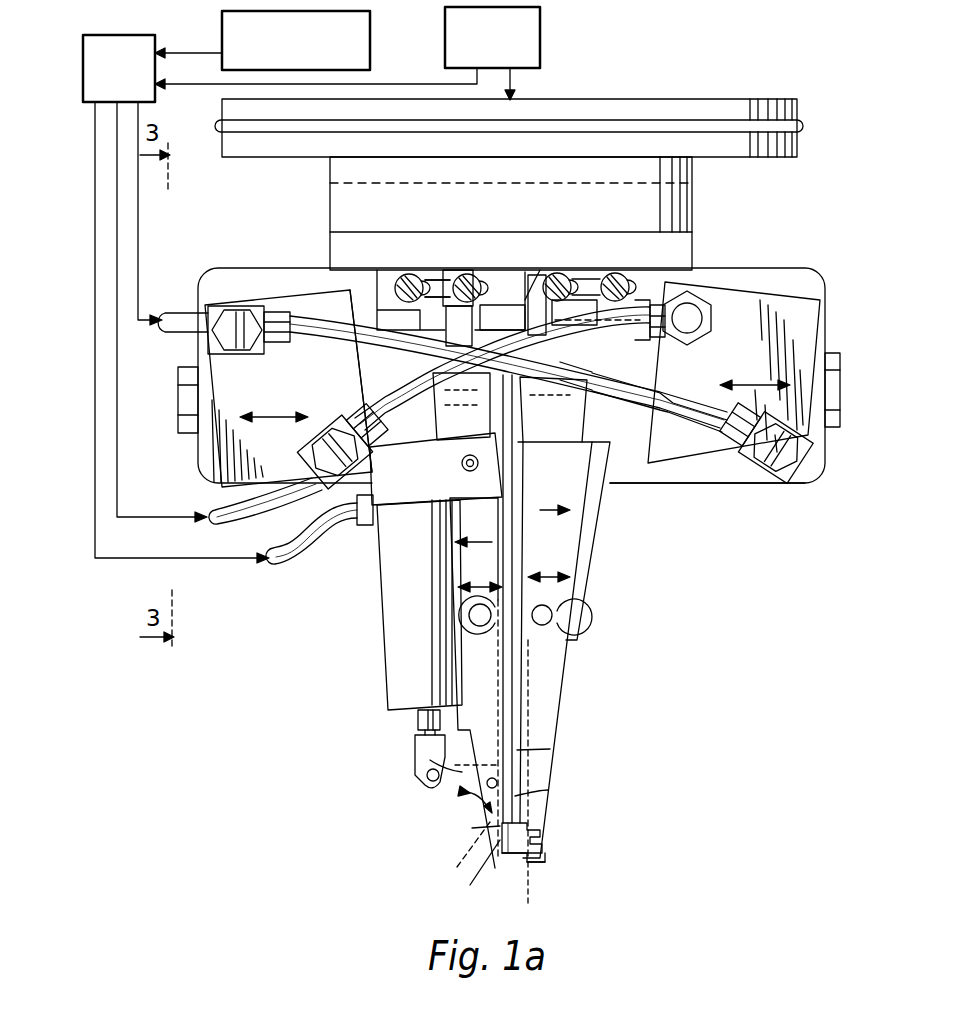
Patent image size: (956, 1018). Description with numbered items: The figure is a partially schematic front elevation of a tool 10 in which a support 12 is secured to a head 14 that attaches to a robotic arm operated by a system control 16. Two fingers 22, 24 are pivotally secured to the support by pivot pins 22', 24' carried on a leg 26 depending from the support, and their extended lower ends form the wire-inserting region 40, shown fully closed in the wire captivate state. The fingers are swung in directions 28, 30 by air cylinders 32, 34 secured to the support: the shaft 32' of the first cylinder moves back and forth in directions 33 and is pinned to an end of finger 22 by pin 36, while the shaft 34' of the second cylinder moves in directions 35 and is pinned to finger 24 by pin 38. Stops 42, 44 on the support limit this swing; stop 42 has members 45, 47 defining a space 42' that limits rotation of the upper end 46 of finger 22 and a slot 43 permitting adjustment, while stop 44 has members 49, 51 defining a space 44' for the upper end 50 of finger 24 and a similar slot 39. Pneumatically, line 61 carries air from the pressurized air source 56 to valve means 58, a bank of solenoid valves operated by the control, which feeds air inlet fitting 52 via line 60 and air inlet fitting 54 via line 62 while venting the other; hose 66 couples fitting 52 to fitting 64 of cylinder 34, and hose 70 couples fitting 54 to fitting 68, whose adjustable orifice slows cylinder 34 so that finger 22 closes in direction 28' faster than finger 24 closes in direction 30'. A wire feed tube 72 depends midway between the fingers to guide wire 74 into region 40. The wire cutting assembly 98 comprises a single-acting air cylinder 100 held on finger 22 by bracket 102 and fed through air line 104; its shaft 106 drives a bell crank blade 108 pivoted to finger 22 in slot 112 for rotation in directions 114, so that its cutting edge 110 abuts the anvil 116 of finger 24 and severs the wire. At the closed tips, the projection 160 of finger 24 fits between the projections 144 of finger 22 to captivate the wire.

The tool 10 is at (662, 545).
The support 12 is at (668, 483).
The head 14 is at (330, 212).
The system control 16 is at (538, 45).
The finger 22 is at (448, 683).
The pivot pin 22' is at (479, 634).
The finger 24 is at (557, 650).
The pivot pin 24' is at (575, 617).
The leg 26 is at (600, 524).
The direction 28 is at (480, 568).
The direction 28' is at (473, 524).
The direction 30 is at (549, 559).
The direction 30' is at (557, 491).
The air cylinder 32 is at (269, 388).
The shaft 32' is at (345, 381).
The directions 33 is at (272, 420).
The air cylinder 34 is at (734, 366).
The shaft 34' is at (528, 368).
The directions 35 is at (766, 376).
The pin 36 is at (461, 406).
The pin 38 is at (560, 400).
The slot 39 is at (580, 305).
The region 40 is at (562, 800).
The stop 42 is at (508, 361).
The space 42' is at (478, 291).
The slot 43 is at (400, 284).
The stop 44 is at (651, 288).
The space 44' is at (591, 268).
The member 45 is at (427, 297).
The upper end 46 is at (460, 300).
The member 47 is at (537, 300).
The member 49 is at (540, 270).
The upper end 50 is at (597, 370).
The member 51 is at (614, 300).
The air inlet fitting 52 is at (236, 357).
The air inlet fitting 54 is at (368, 466).
The pressurized air source 56 is at (370, 53).
The valve means 58 is at (158, 40).
The line 60 is at (138, 215).
The line 61 is at (207, 60).
The line 62 is at (117, 408).
The air inlet fitting 64 is at (788, 483).
The hose 66 is at (680, 420).
The air inlet fitting 68 is at (711, 322).
The hose 70 is at (405, 464).
The wire feed tube 72 is at (550, 749).
The wire 74 is at (548, 790).
The wire cutting assembly 98 is at (410, 788).
The air cylinder 100 is at (385, 618).
The bracket 102 is at (404, 510).
The air line 104 is at (112, 560).
The shaft 106 is at (418, 722).
The bell crank blade 108 is at (462, 798).
The cutting edge 110 is at (469, 876).
The slot 112 is at (453, 853).
The directions 114 is at (478, 826).
The anvil 116 is at (529, 897).
The projections 144 is at (510, 856).
The projection 160 is at (545, 864).